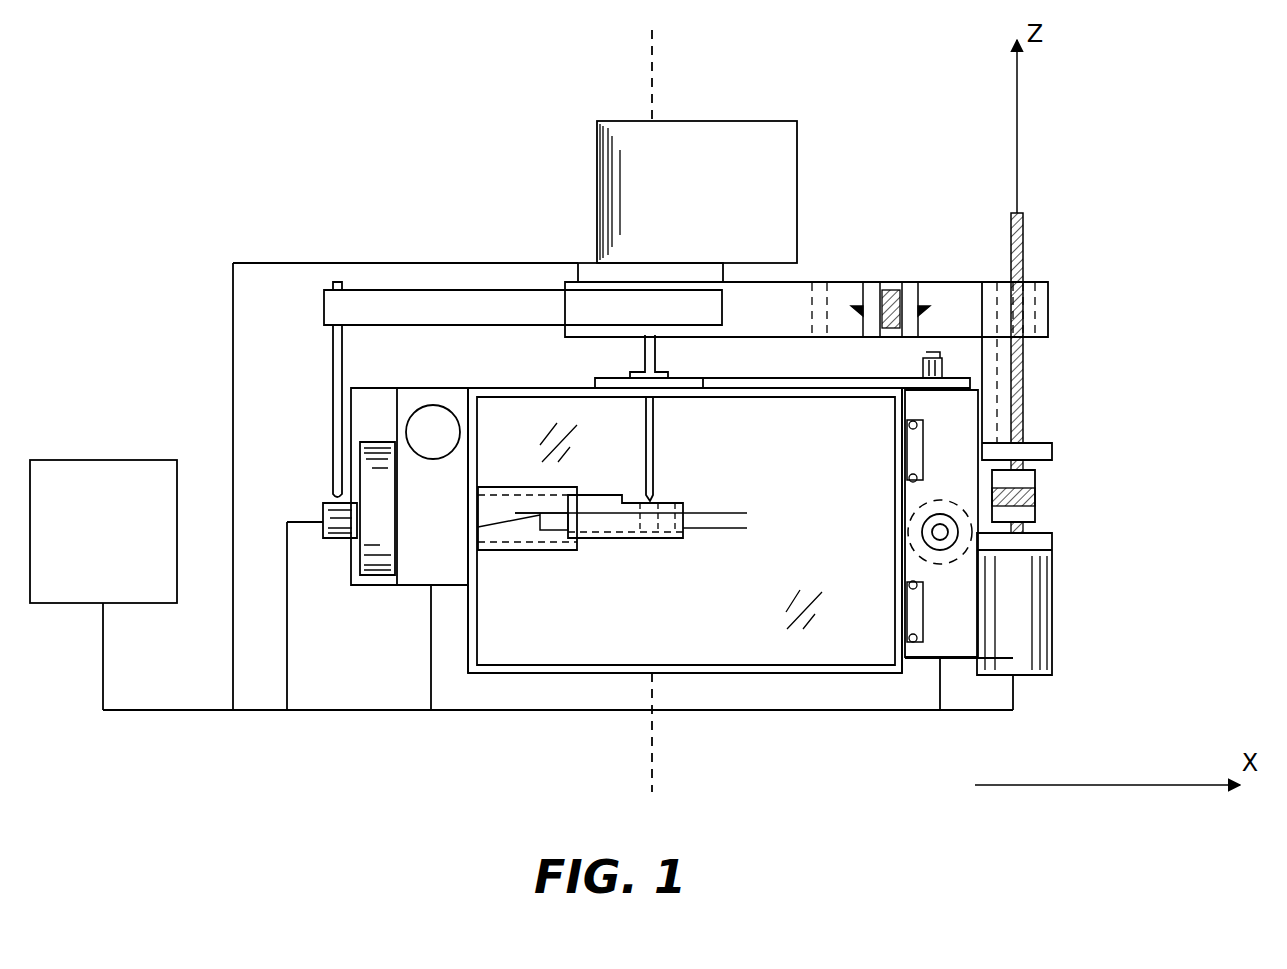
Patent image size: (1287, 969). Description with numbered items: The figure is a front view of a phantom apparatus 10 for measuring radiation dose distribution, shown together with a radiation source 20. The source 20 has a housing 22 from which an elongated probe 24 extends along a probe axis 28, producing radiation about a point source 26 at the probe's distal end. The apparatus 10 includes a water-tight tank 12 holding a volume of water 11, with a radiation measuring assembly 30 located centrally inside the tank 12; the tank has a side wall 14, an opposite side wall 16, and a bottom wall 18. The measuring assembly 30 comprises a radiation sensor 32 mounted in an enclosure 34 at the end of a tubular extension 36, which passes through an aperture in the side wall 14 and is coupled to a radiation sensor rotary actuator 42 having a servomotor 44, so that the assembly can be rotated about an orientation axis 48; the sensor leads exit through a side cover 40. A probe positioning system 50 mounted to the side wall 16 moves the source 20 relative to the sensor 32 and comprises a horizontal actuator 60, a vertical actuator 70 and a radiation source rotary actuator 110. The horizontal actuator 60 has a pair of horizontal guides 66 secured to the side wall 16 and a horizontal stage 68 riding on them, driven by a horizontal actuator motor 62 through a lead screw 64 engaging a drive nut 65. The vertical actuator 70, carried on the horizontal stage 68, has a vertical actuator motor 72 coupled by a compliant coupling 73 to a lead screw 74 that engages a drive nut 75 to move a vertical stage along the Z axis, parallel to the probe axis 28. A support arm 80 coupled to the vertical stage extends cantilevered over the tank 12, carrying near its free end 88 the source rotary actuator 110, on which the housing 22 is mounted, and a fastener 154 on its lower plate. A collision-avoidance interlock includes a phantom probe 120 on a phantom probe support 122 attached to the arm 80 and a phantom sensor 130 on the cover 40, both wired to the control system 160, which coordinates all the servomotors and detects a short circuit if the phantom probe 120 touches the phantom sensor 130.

The phantom apparatus 10 is at (144, 106).
The volume of water 11 is at (519, 641).
The tank 12 is at (813, 695).
The side wall 14 is at (467, 637).
The side wall 16 is at (905, 668).
The bottom wall 18 is at (702, 647).
The radiation source 20 is at (562, 112).
The housing 22 is at (762, 147).
The elongated probe 24 is at (655, 438).
The point source 26 is at (653, 498).
The probe axis 28 is at (652, 83).
The radiation measuring assembly 30 is at (605, 552).
The radiation sensor 32 is at (647, 530).
The enclosure 34 is at (683, 527).
The tubular extension 36 is at (493, 483).
The side cover 40 is at (356, 562).
The radiation sensor rotary actuator 42 is at (432, 530).
The servomotor 44 is at (424, 423).
The orientation axis 48 is at (722, 512).
The probe positioning system 50 is at (1125, 530).
The horizontal actuator 60 is at (947, 677).
The horizontal actuator motor 62 is at (952, 562).
The lead screw 64 is at (935, 528).
The drive nut 65 is at (925, 540).
The horizontal guides 66 is at (915, 452).
The horizontal stage 68 is at (934, 460).
The vertical actuator 70 is at (1070, 428).
The vertical actuator motor 72 is at (1020, 577).
The compliant coupling 73 is at (1023, 482).
The lead screw 74 is at (1018, 380).
The drive nut 75 is at (1035, 268).
The support arm 80 is at (851, 262).
The free end 88 is at (610, 331).
The radiation source rotary actuator 110 is at (597, 272).
The phantom probe 120 is at (335, 445).
The phantom probe support 122 is at (397, 300).
The phantom sensor 130 is at (328, 510).
The fastener 154 is at (923, 362).
The control system 160 is at (46, 593).